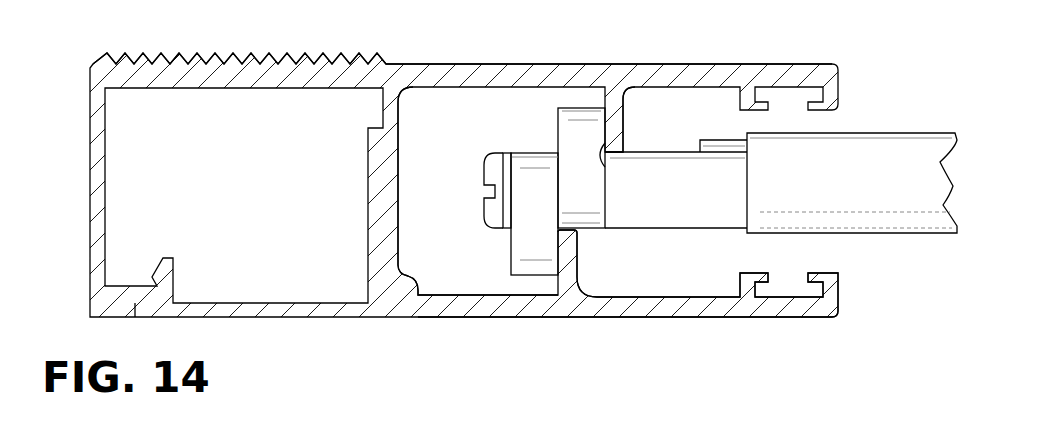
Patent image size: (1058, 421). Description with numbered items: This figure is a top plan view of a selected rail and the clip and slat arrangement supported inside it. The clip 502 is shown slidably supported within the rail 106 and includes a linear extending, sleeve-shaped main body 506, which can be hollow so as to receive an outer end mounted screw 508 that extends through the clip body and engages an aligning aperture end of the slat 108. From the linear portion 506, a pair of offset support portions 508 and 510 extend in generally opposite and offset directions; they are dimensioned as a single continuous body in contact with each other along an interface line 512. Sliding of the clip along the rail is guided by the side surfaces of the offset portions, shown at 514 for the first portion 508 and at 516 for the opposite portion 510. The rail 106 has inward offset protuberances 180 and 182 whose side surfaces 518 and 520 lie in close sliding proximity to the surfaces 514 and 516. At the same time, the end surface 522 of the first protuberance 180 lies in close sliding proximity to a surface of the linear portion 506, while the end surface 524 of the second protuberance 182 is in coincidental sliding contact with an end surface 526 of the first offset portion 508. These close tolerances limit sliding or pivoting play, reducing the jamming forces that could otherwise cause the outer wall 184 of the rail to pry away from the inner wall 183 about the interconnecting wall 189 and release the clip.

The rail 106 is at (440, 338).
The slat 108 is at (893, 222).
The first inward offset protuberance 180 is at (622, 122).
The second inward offset protuberance 182 is at (578, 250).
The inner wall 183 is at (433, 75).
The outer wall 184 is at (764, 318).
The interconnecting wall 189 is at (400, 115).
The clip 502 is at (829, 221).
The linear extending main body 506 is at (697, 150).
The first offset support portion 508 is at (590, 192).
The second offset support portion 510 is at (523, 268).
The interface line 512 is at (555, 188).
The sliding support profile 514 is at (604, 108).
The sliding support profile 516 is at (562, 218).
The side surface 518 is at (607, 163).
The side surface 520 is at (545, 275).
The end surface 522 is at (612, 155).
The end surface 524 is at (507, 225).
The end surface 526 is at (590, 232).